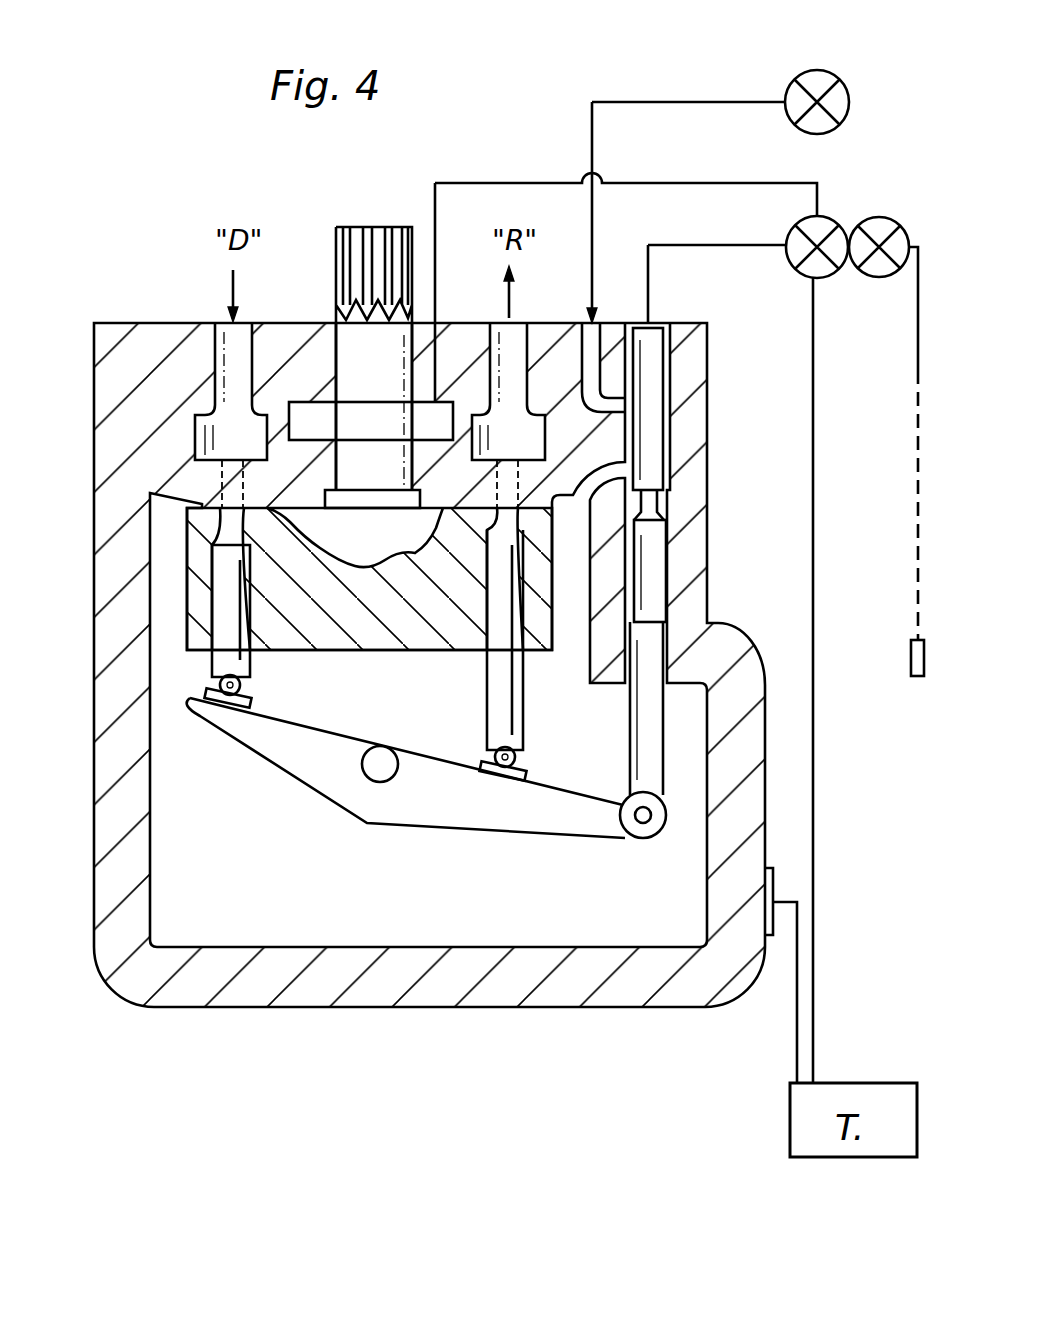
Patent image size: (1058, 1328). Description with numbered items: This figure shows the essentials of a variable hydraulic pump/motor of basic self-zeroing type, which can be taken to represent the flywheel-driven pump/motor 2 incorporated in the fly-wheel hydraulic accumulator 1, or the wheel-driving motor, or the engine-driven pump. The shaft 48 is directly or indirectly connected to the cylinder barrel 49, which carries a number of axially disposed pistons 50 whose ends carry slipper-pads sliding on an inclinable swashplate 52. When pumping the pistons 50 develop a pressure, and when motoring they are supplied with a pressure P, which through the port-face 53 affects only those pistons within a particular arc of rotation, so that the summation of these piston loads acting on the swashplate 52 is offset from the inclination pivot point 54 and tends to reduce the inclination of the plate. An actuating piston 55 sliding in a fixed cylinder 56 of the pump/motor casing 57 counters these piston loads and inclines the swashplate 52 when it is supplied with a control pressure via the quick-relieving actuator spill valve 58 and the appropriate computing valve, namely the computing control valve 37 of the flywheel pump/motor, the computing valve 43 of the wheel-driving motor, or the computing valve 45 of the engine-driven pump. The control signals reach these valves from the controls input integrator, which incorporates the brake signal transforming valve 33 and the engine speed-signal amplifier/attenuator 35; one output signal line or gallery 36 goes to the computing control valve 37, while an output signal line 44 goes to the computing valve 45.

The fly-wheel hydraulic accumulator 1 is at (830, 226).
The pump/motor 2 is at (886, 226).
The brake signal transforming valve 33 is at (691, 244).
The engine speed-signal amplifier/attenuator 35 is at (299, 408).
The output signal line or gallery 36 is at (496, 182).
The computing control valve 37 is at (802, 75).
The computing valve 43 is at (686, 212).
The output signal line 44 is at (910, 666).
The computing valve 45 is at (918, 368).
The shaft 48 is at (358, 258).
The cylinder barrel 49 is at (393, 551).
The pistons 50 is at (242, 612).
The inclinable swashplate 52 is at (282, 755).
The port-face 53 is at (215, 506).
The inclination pivot point 54 is at (382, 768).
The actuating piston 55 is at (657, 652).
The fixed cylinder 56 is at (668, 556).
The pump/motor casing 57 is at (138, 338).
The quick-relieving actuator spill valve 58 is at (688, 367).